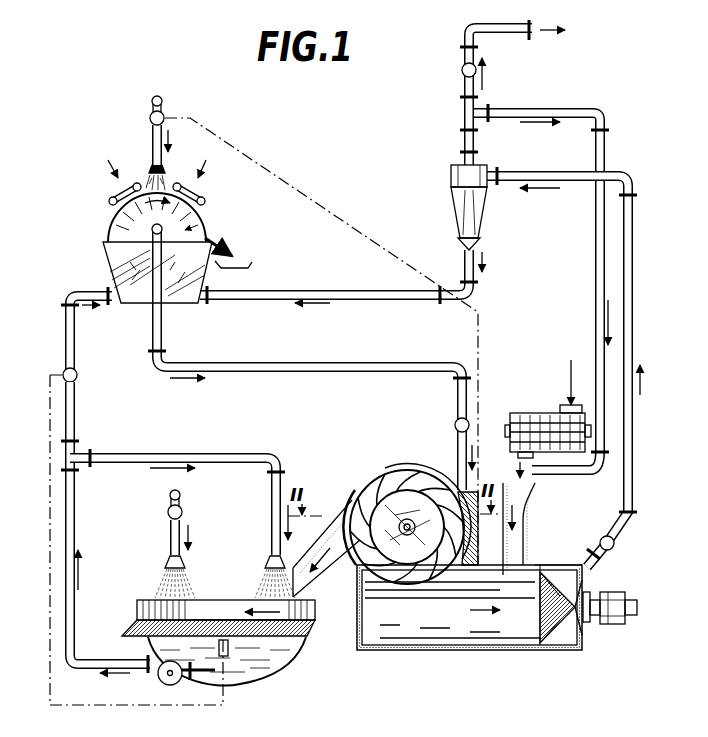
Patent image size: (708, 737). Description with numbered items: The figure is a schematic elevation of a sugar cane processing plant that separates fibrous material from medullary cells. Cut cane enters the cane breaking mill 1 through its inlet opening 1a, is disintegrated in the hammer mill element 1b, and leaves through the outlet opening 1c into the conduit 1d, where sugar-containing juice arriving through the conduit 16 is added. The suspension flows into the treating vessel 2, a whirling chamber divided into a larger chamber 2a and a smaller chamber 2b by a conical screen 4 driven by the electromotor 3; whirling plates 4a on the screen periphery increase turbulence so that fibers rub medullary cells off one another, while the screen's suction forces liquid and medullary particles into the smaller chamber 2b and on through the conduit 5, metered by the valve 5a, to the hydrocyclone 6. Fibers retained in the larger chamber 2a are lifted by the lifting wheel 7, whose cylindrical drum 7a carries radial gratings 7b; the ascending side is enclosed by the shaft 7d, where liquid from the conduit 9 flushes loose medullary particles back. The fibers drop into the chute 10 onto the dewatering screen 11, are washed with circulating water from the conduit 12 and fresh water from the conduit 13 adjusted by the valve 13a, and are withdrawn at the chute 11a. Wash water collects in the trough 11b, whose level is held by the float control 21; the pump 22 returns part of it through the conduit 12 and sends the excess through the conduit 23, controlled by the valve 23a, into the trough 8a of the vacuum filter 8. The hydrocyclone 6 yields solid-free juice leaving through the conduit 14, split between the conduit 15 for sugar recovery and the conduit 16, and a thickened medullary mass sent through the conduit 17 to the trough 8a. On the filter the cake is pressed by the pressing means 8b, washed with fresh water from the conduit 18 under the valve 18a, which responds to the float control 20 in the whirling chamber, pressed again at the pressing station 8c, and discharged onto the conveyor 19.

The cane breaking mill 1 is at (522, 410).
The inlet opening 1a is at (562, 373).
The hammer mill element 1b is at (560, 410).
The outlet opening 1c is at (535, 458).
The conduit 1d is at (527, 525).
The treating vessel 2 is at (468, 655).
The larger chamber 2a is at (407, 640).
The smaller chamber 2b is at (562, 567).
The electromotor 3 is at (612, 594).
The conical screen 4 is at (576, 628).
The whirling plates 4a is at (540, 645).
The conduit 5 is at (634, 320).
The valve 5a is at (615, 543).
The hydrocyclone 6 is at (458, 200).
The lifting wheel 7 is at (408, 492).
The cylindrical drum 7a is at (386, 490).
The gratings 7b is at (366, 502).
The shaft 7d is at (456, 498).
The vacuum filter 8 is at (104, 232).
The trough 8a is at (183, 302).
The pressing means 8b is at (110, 200).
The pressing station 8c is at (204, 198).
The conduit 9 is at (353, 366).
The chute 10 is at (318, 563).
The dewatering screen 11 is at (198, 603).
The chute 11a is at (130, 626).
The trough 11b is at (282, 655).
The conduit 12 is at (74, 520).
The conduit 13 is at (170, 543).
The valve 13a is at (168, 512).
The conduit 14 is at (463, 86).
The conduit 15 is at (536, 33).
The conduit 16 is at (596, 266).
The conduit 17 is at (335, 287).
The conduit 18 is at (153, 140).
The valve 18a is at (150, 118).
The conveyor 19 is at (256, 267).
The float control 20 is at (480, 573).
The float control 21 is at (233, 660).
The pump 22 is at (160, 682).
The conduit 23 is at (66, 328).
The valve 23a is at (78, 374).